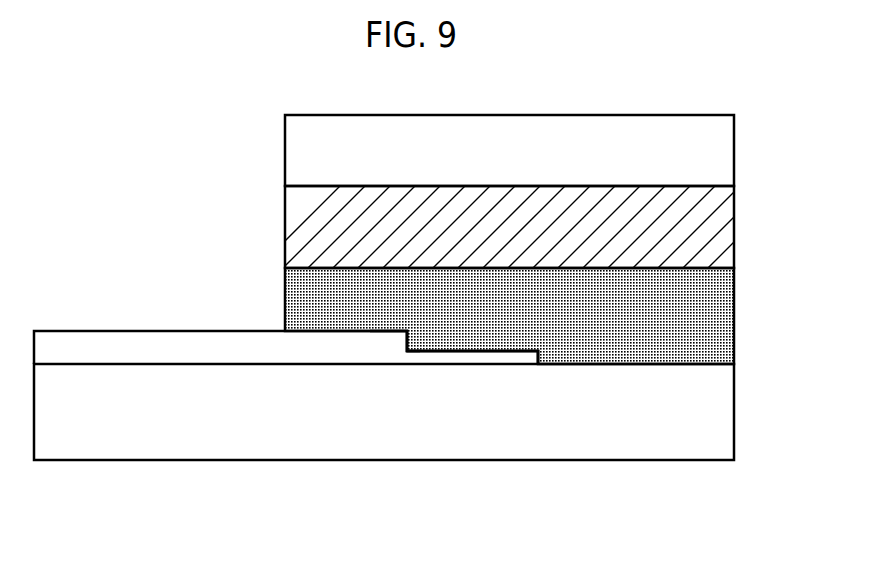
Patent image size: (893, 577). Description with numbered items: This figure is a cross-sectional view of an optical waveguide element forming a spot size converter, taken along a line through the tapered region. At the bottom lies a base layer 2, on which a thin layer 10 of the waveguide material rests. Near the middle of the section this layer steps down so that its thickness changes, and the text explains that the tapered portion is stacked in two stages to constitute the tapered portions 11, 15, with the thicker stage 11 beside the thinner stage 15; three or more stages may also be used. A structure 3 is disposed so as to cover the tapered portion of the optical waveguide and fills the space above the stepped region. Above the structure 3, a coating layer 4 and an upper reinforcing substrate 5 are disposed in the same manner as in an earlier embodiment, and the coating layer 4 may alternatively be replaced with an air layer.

The substrate 2 is at (702, 430).
The structure 3 is at (702, 315).
The coating layer 4 is at (703, 215).
The upper reinforcing substrate 5 is at (702, 155).
The electrode (1) 10 is at (83, 348).
The tapered portion 11 is at (400, 338).
The tapered portion 15 is at (532, 353).